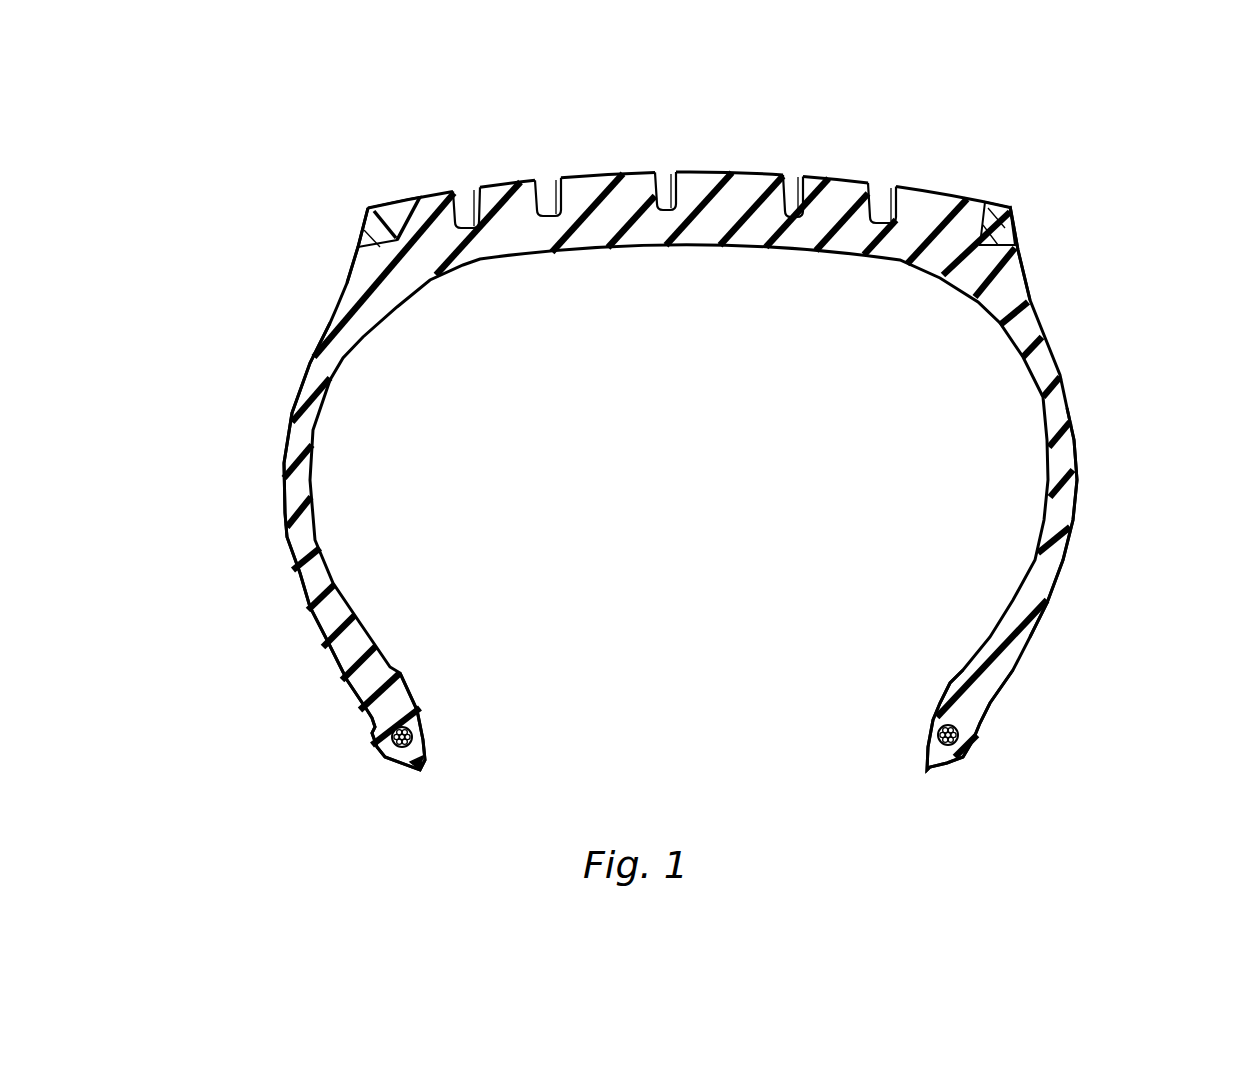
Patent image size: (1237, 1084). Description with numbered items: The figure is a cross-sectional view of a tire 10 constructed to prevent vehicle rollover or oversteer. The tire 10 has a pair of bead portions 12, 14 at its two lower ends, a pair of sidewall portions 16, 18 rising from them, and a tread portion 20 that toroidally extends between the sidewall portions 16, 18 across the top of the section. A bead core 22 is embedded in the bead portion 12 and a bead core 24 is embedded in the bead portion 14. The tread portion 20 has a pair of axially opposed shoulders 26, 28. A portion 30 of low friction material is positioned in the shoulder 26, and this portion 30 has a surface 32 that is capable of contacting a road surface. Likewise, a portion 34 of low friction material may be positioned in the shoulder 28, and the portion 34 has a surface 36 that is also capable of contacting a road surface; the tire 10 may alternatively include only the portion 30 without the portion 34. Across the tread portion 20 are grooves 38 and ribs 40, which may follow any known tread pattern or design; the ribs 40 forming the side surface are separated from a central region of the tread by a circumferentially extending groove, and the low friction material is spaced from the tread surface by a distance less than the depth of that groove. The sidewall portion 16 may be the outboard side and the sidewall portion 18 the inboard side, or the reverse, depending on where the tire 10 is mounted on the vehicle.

The tire 10 is at (710, 112).
The bead portion 12 is at (350, 747).
The bead portion 14 is at (1003, 745).
The sidewall portion 16 is at (269, 478).
The sidewall portion 18 is at (1104, 466).
The tread portion 20 is at (687, 237).
The bead core 22 is at (392, 735).
The bead core 24 is at (970, 722).
The shoulder 26 is at (332, 229).
The shoulder 28 is at (1048, 227).
The portion of low friction material 30 is at (372, 227).
The surface 32 is at (353, 251).
The portion of low friction material 34 is at (1015, 234).
The surface 36 is at (1020, 244).
The grooves 38 is at (460, 191).
The ribs 40 is at (418, 196).